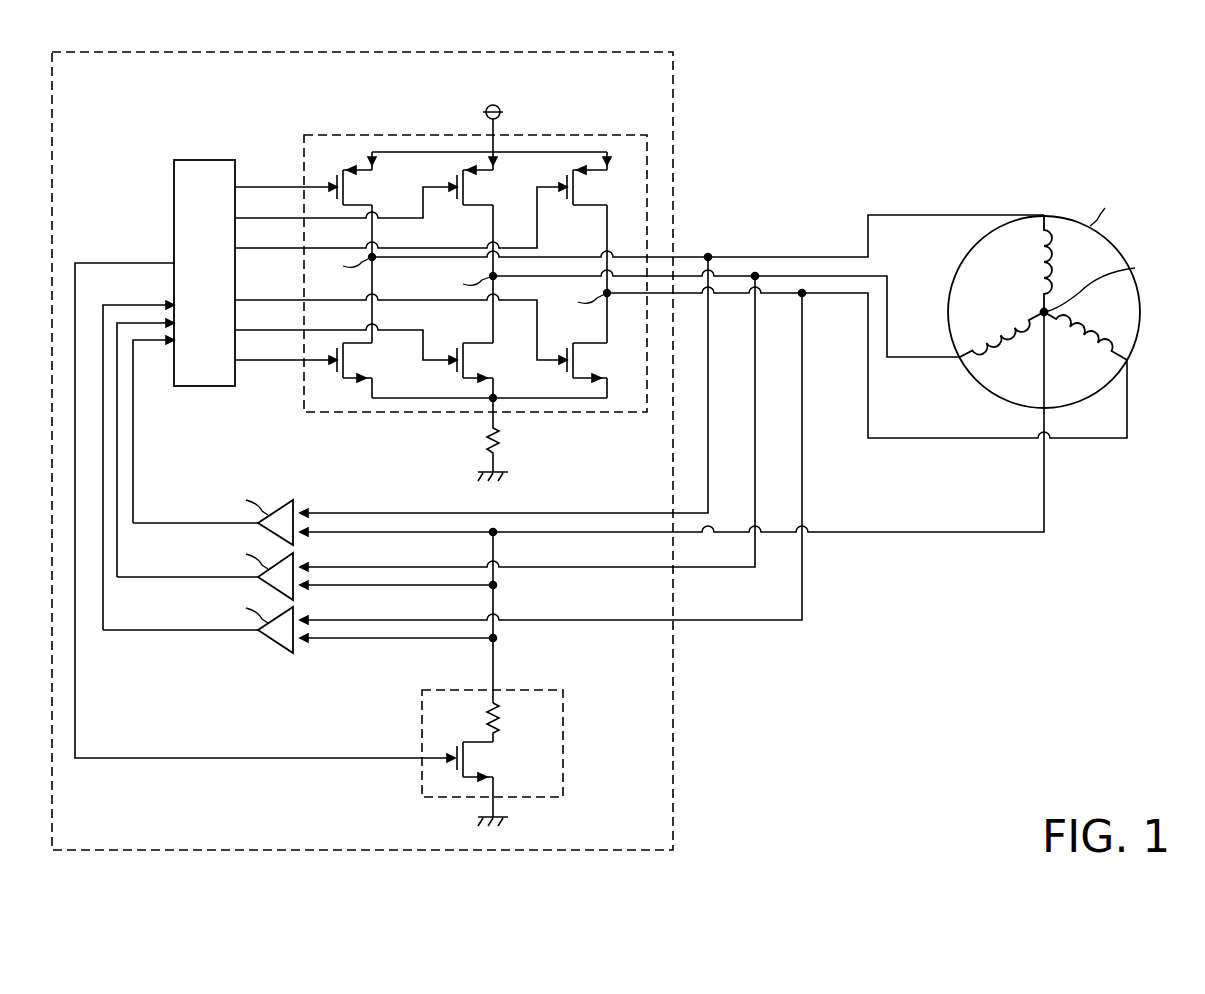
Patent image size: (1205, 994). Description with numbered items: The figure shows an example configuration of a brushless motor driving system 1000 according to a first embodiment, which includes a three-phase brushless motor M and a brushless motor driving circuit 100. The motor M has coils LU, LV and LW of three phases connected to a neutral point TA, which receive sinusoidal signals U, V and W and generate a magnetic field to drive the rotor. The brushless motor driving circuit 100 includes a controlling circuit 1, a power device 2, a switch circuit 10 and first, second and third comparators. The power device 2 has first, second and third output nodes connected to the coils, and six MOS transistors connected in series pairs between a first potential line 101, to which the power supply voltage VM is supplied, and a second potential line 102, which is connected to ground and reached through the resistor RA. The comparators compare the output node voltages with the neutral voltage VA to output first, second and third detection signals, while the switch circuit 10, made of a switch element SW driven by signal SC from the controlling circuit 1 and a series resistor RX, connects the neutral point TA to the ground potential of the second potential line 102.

The controlling circuit 1 is at (204, 160).
The power device 2 is at (396, 133).
The switch circuit 10 is at (563, 741).
The brushless motor driving circuit 100 is at (675, 104).
The first potential line 101 is at (493, 105).
The second potential line 102 is at (478, 472).
The brushless motor driving system 1000 is at (931, 813).